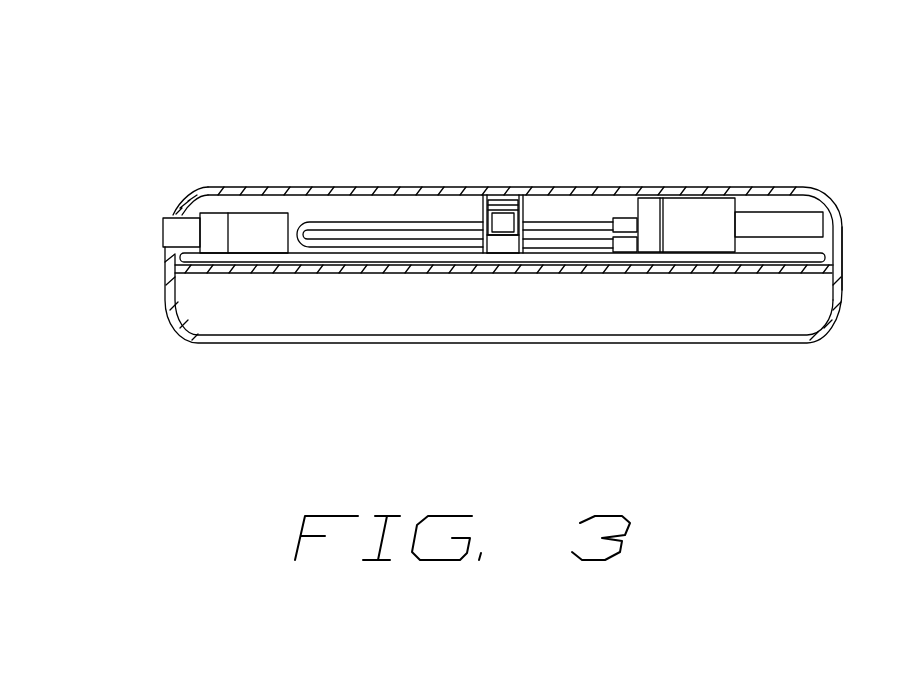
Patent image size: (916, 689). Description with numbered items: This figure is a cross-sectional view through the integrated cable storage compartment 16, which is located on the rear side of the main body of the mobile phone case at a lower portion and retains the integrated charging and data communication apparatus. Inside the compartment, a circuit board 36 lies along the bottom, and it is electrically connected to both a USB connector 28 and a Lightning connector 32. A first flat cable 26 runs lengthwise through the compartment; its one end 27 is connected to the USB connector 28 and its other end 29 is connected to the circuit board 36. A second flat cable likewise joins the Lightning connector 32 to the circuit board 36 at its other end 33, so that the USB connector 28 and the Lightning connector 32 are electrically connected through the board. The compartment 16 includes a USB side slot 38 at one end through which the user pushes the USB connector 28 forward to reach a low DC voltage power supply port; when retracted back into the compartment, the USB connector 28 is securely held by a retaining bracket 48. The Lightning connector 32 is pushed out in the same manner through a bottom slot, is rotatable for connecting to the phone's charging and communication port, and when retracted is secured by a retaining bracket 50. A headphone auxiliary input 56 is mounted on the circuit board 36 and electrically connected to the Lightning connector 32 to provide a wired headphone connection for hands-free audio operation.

The integrated cable storage compartment 16 is at (172, 215).
The first flat cable 26 is at (368, 222).
The one end of first flat cable 27 is at (620, 222).
The USB connector 28 is at (780, 212).
The other end of first flat cable 29 is at (623, 247).
The Lightning connector 32 is at (505, 208).
The other end of second flat cable 33 is at (507, 247).
The circuit board 36 is at (783, 262).
The USB side slot 38 is at (842, 248).
The retaining bracket 48 is at (697, 195).
The retaining bracket 50 is at (482, 195).
The headphone auxiliary input 56 is at (243, 213).